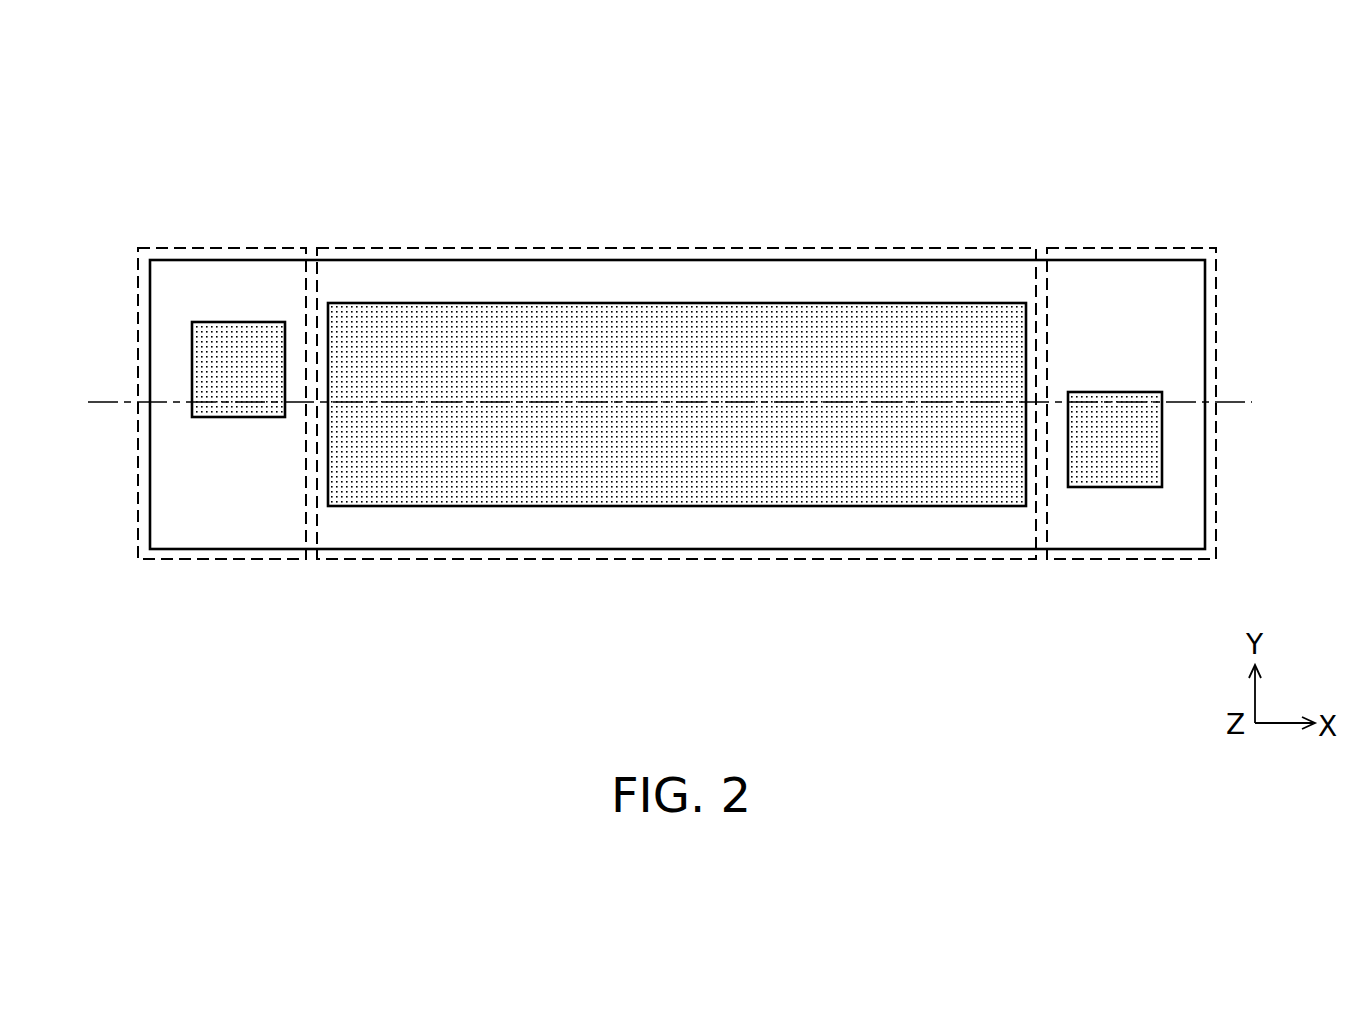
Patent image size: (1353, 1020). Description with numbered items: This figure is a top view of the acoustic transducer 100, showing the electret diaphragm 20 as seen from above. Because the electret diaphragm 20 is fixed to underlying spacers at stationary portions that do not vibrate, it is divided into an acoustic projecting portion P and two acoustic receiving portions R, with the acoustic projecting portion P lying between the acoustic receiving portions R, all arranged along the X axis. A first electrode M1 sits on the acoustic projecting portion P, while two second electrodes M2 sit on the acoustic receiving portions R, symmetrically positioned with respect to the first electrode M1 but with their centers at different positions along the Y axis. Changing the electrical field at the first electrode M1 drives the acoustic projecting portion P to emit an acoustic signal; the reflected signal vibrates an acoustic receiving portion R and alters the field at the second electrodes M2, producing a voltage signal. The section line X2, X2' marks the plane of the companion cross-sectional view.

The acoustic transducer 100 is at (98, 45).
The electret diaphragm 20 is at (1207, 305).
The acoustic receiving portion R is at (166, 248).
The acoustic projecting portion P is at (565, 248).
The first electrode M1 is at (677, 323).
The second electrode M2 is at (238, 343).
The section line end X2 is at (655, 452).
The section line end X2' is at (1268, 451).